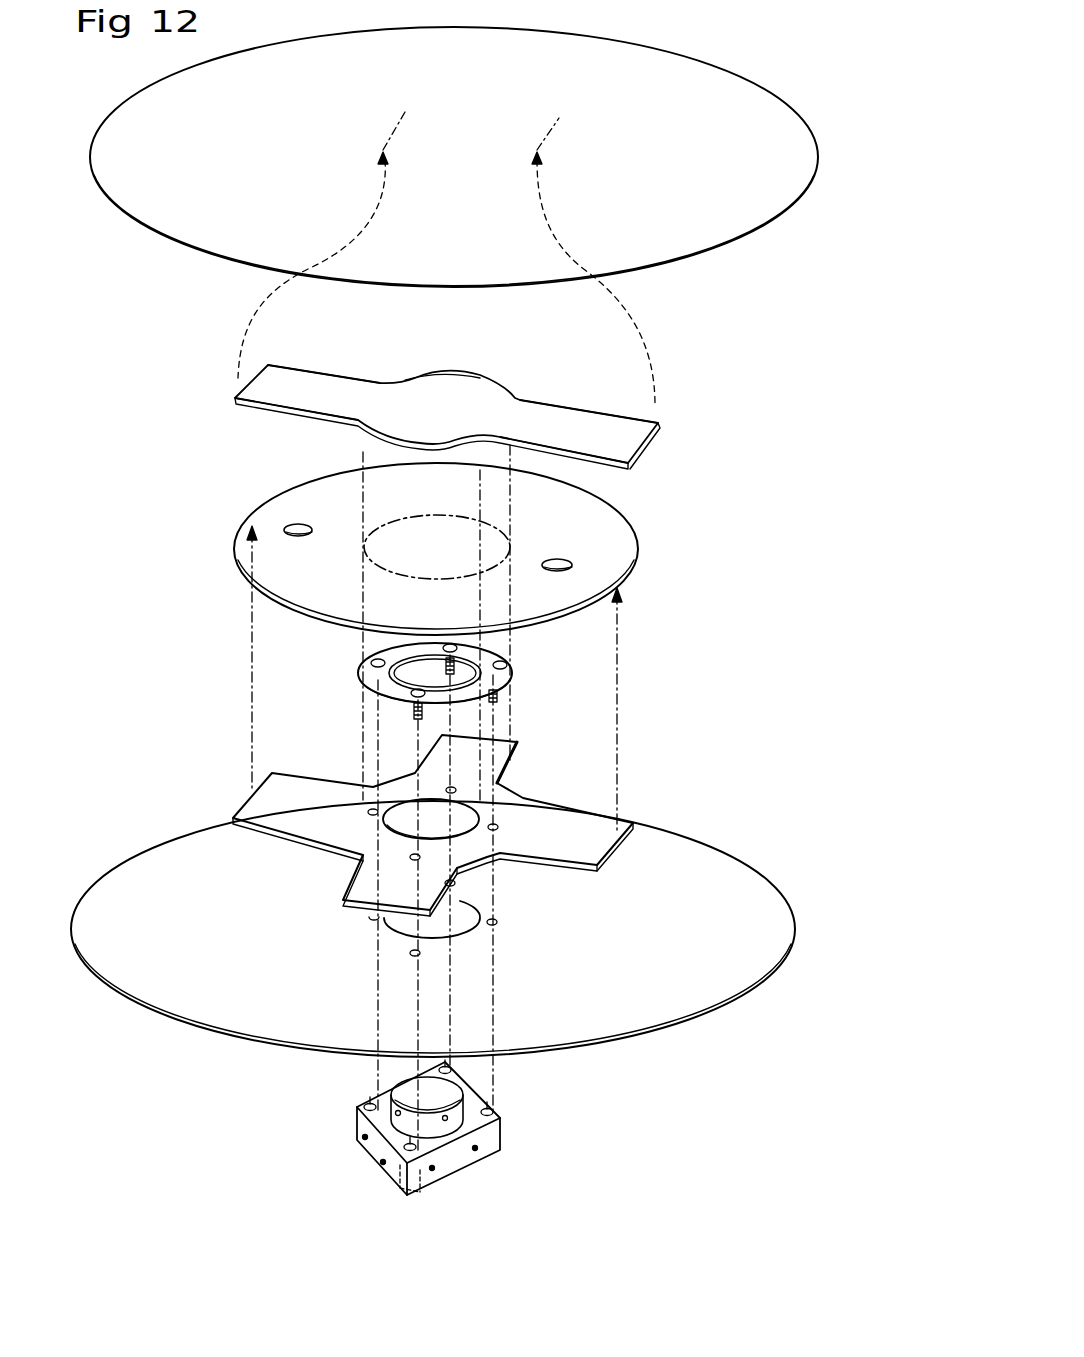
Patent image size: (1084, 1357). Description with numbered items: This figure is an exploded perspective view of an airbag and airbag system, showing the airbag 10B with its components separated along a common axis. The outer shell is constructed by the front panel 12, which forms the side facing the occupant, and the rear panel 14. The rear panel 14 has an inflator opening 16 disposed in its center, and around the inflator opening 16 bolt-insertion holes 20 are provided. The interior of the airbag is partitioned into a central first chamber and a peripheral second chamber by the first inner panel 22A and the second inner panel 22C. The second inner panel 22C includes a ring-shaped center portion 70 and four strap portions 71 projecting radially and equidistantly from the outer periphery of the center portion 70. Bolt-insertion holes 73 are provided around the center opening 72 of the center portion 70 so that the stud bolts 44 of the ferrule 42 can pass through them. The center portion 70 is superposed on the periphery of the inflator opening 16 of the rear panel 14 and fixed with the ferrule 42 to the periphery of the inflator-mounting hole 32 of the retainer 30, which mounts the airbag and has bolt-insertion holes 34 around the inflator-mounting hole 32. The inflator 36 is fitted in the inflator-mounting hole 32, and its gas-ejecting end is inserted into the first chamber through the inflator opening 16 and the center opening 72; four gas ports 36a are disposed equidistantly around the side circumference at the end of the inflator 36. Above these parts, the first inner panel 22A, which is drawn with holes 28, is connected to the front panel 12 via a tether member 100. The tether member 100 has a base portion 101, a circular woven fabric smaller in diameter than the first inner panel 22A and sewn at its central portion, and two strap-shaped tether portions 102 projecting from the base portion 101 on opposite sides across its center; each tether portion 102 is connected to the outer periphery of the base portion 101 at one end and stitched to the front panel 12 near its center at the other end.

The airbag 10B is at (738, 1020).
The front panel 12 is at (784, 72).
The rear panel 14 is at (205, 1020).
The inflator opening 16 is at (452, 945).
The bolt-insertion holes 20 is at (456, 883).
The first inner panel 22A is at (610, 504).
The second inner panel 22C is at (212, 788).
The vent holes of first inner panel 28 is at (293, 525).
The retainer 30 is at (504, 1126).
The inflator-mounting hole 32 is at (365, 1150).
The bolt-insertion holes 34 is at (365, 1108).
The inflator 36 is at (528, 1142).
The gas ports 36a is at (468, 1098).
The ferrule 42 is at (515, 662).
The stud bolts 44 is at (440, 640).
The center portion 70 is at (345, 862).
The strap portions 71 is at (513, 746).
The center opening 72 is at (498, 800).
The bolt-insertion holes 73 is at (368, 812).
The tether member 100 is at (540, 368).
The base portion 101 is at (458, 382).
The tether portions 102 is at (283, 390).